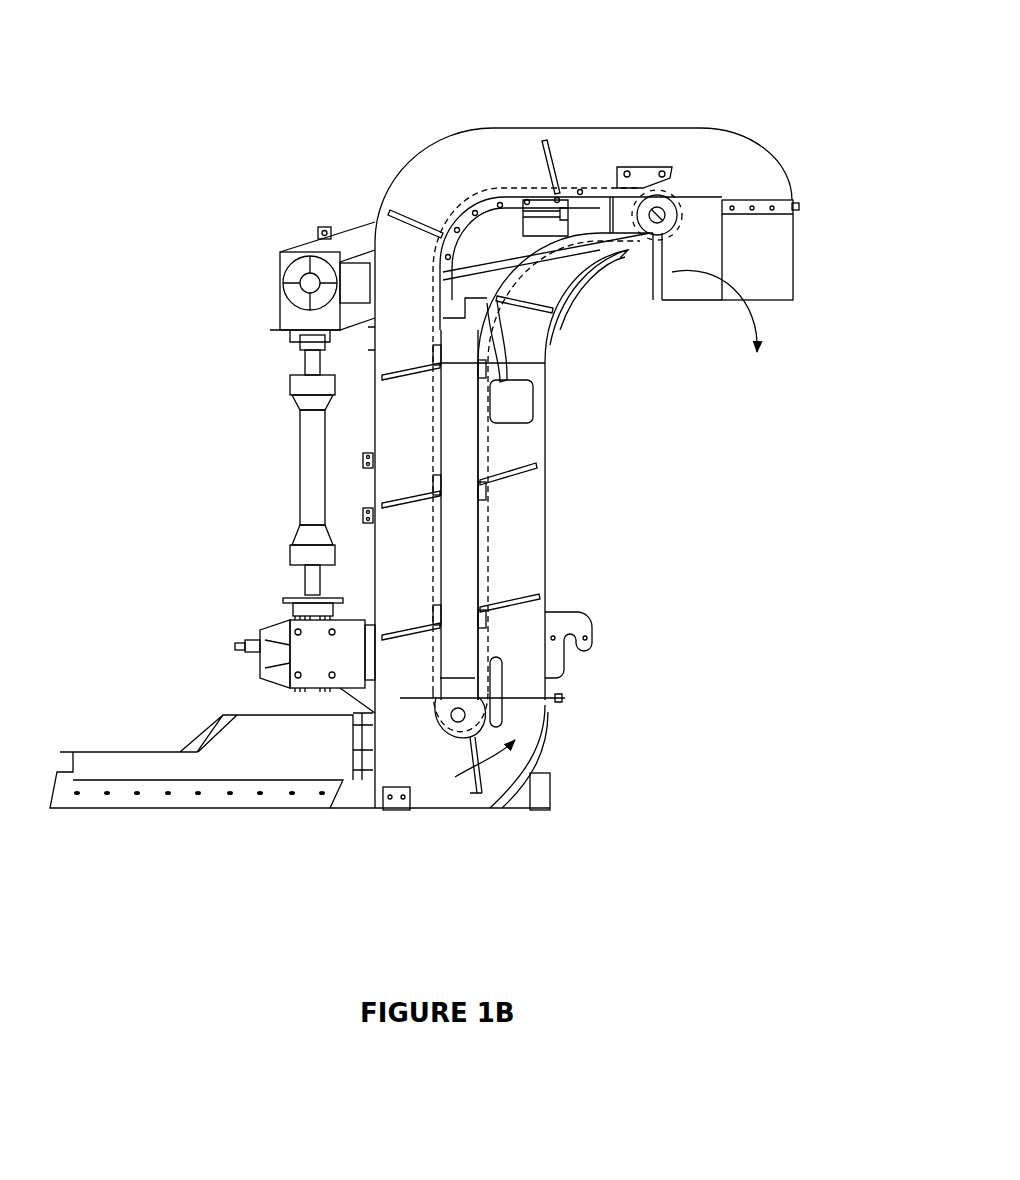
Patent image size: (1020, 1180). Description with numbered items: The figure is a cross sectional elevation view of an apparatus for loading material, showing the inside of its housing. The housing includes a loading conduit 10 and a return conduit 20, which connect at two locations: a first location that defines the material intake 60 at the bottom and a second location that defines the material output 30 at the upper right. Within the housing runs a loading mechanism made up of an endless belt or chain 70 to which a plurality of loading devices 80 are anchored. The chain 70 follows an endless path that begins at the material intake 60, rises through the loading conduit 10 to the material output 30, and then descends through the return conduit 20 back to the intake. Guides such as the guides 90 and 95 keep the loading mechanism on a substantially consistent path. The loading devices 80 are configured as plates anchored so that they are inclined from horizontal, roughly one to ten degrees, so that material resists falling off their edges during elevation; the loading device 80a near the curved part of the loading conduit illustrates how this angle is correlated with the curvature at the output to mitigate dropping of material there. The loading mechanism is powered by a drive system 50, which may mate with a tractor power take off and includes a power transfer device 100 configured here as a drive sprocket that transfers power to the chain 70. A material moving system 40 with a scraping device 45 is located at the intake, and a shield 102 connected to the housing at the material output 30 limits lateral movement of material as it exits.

The loading conduit 10 is at (562, 513).
The return conduit 20 is at (358, 432).
The material output 30 is at (692, 305).
The material moving system 40 is at (145, 835).
The scraping device 45 is at (211, 820).
The drive system 50 is at (225, 645).
The material intake 60 is at (435, 790).
The endless belt or chain 70 is at (492, 548).
The loading device 80 is at (536, 597).
The loading device 80a is at (545, 318).
The guide 90 is at (562, 280).
The guide 95 is at (628, 162).
The power transfer device 100 is at (680, 195).
The shield 102 is at (805, 267).